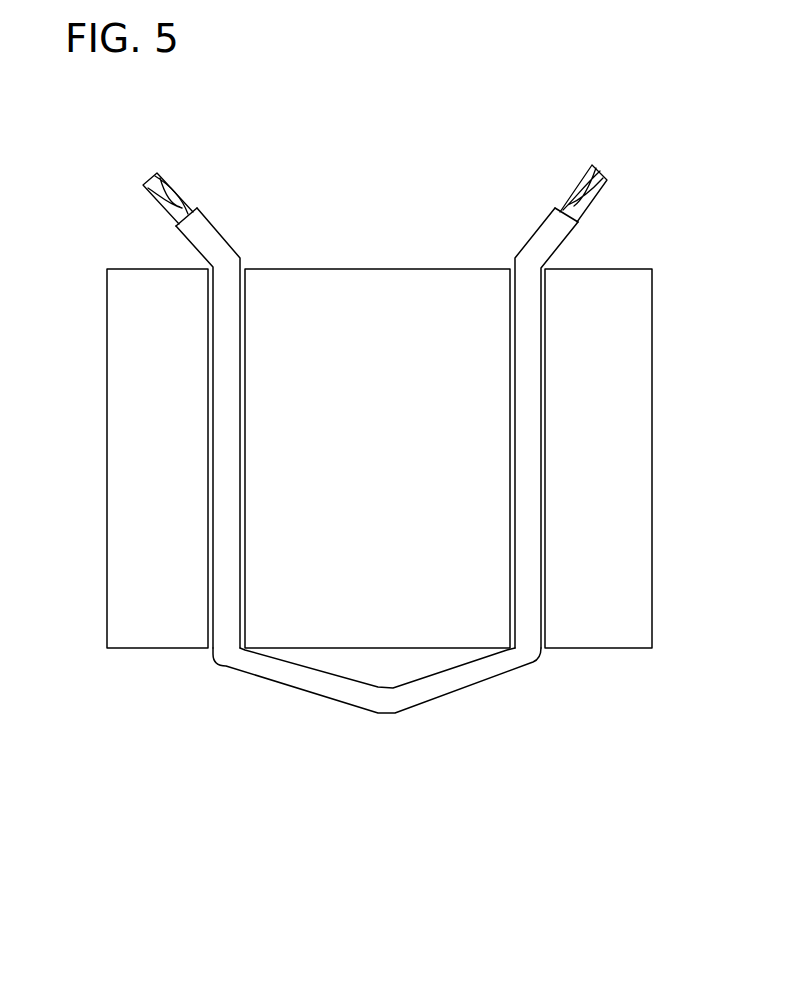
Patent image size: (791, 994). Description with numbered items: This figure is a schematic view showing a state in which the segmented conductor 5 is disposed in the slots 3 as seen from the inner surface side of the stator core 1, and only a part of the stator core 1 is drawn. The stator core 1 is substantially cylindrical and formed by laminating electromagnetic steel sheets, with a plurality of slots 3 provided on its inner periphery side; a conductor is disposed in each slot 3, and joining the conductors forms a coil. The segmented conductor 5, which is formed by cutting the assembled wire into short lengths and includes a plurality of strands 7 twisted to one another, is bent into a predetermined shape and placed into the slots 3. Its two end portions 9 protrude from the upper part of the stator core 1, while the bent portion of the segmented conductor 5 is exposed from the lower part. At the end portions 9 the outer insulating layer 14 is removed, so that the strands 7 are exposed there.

The stator core 1 is at (388, 278).
The slot 3 is at (547, 608).
The segmented conductor 5 is at (386, 712).
The strand 7 is at (163, 208).
The end portion 9 is at (160, 170).
The outer insulating layer 14 is at (343, 487).